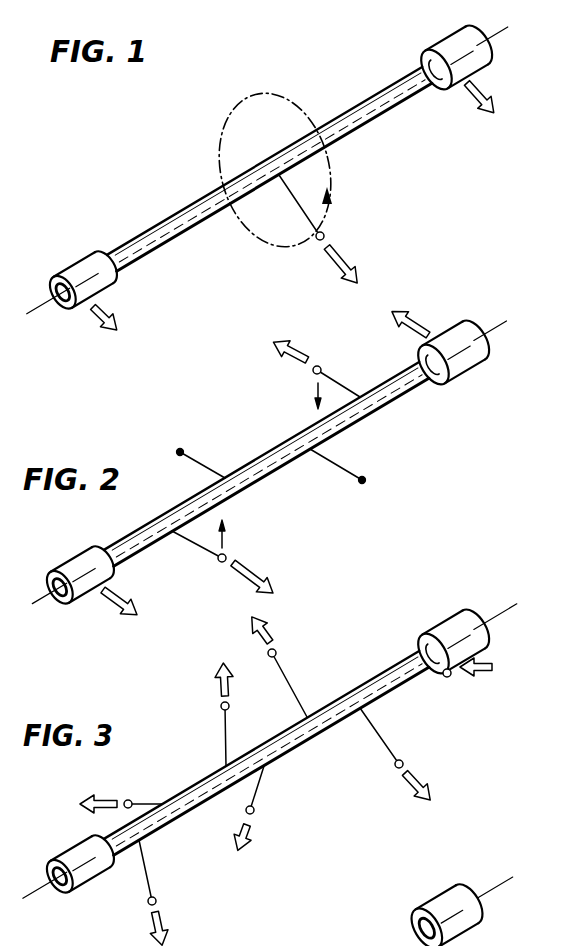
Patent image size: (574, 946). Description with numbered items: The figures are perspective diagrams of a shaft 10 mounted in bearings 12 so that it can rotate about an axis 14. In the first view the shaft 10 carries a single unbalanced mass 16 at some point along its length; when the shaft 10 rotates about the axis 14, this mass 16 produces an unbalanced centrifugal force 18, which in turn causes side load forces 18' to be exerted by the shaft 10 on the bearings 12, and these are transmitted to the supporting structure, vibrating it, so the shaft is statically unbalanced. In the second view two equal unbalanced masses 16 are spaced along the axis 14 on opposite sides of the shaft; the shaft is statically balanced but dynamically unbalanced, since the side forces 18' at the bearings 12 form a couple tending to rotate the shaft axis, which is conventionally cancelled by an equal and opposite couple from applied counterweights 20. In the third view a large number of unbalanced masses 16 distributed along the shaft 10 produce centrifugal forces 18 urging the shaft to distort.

In FIG. 1, the shaft 10 is at (350, 110).
In FIG. 2, the shaft 10 is at (271, 473).
In FIG. 3, the shaft 10 is at (386, 693).
In FIG. 1, the bearings 12 is at (70, 271).
In FIG. 2, the bearings 12 is at (64, 567).
In FIG. 3, the bearings 12 is at (446, 622).
In FIG. 1, the axis 14 is at (30, 316).
In FIG. 2, the axis 14 is at (34, 604).
In FIG. 3, the axis 14 is at (26, 899).
In FIG. 1, the unbalanced mass 16 is at (324, 234).
In FIG. 2, the unbalanced mass 16 is at (321, 367).
In FIG. 3, the unbalanced mass 16 is at (277, 651).
In FIG. 1, the unbalanced centrifugal force 18 is at (359, 265).
In FIG. 2, the unbalanced centrifugal force 18 is at (284, 456).
In FIG. 3, the unbalanced centrifugal force 18 is at (301, 778).
In FIG. 1, the side load forces 18' is at (312, 206).
In FIG. 2, the side load forces 18' is at (282, 467).
In FIG. 2, the counterweights 20 is at (183, 450).